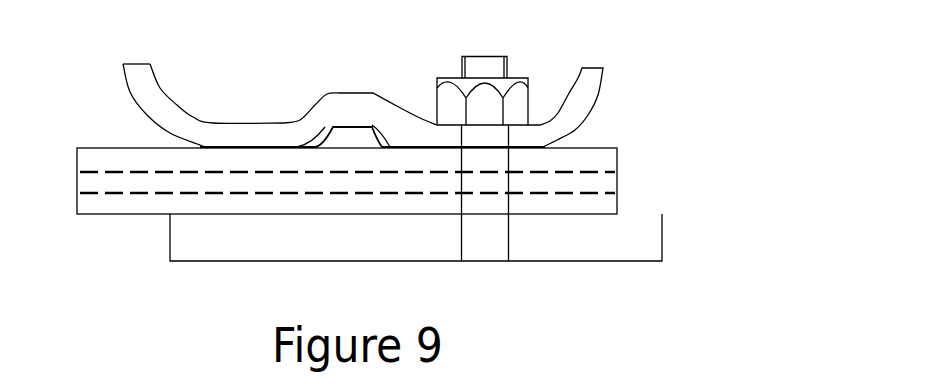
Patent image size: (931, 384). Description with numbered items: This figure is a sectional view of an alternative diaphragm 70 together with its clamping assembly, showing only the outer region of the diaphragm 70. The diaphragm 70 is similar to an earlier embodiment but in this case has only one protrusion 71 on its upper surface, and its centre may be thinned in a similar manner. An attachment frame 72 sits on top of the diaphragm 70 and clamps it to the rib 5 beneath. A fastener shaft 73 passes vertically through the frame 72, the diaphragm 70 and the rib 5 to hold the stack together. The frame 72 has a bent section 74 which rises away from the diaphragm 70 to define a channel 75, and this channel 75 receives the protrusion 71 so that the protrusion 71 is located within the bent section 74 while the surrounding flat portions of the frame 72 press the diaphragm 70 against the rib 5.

The rib 5 is at (200, 238).
The diaphragm 70 is at (90, 163).
The protrusion 71 is at (337, 127).
The attachment frame 72 is at (215, 122).
The fastener shaft 73 is at (480, 238).
The bent section 74 is at (352, 102).
The channel 75 is at (372, 122).